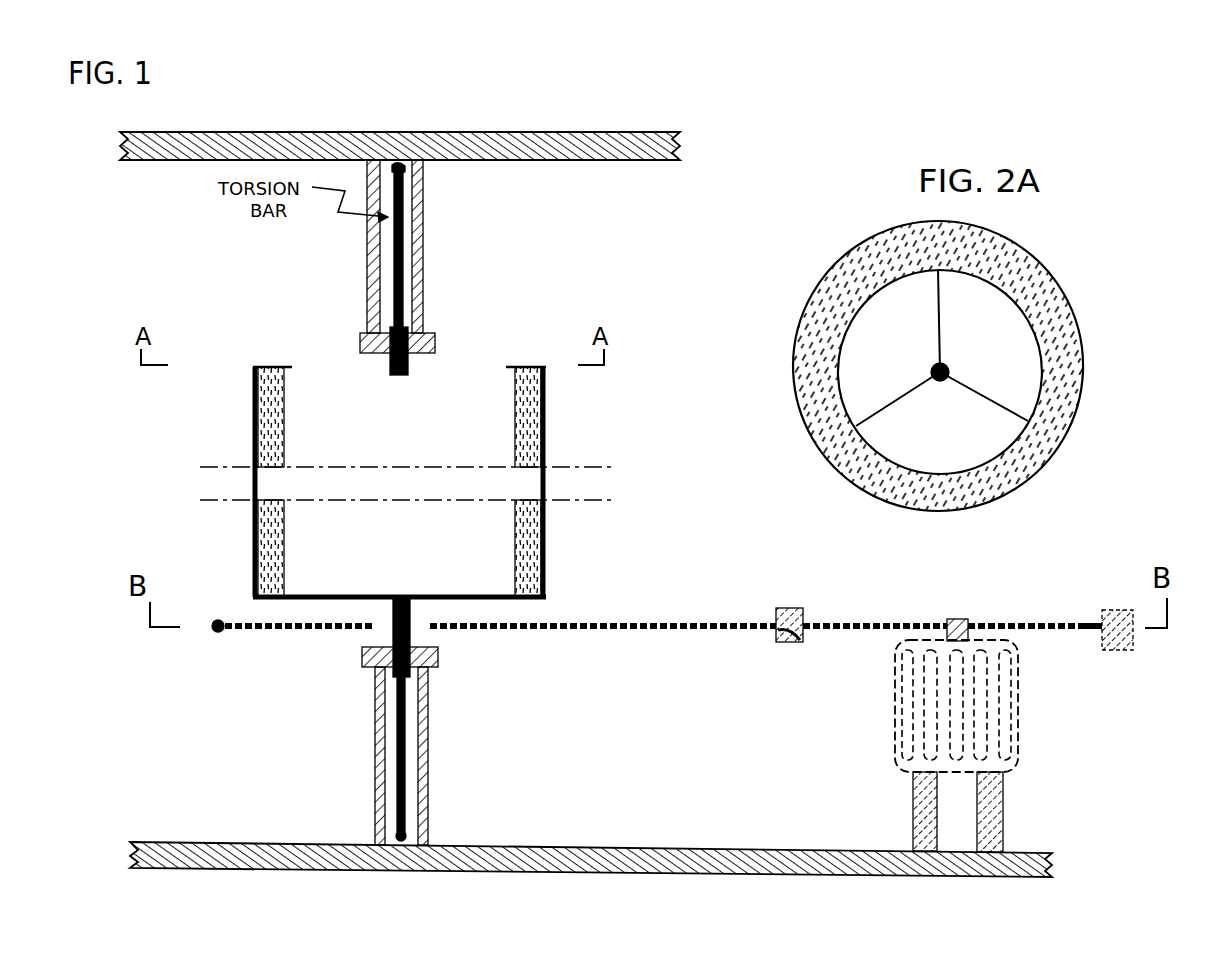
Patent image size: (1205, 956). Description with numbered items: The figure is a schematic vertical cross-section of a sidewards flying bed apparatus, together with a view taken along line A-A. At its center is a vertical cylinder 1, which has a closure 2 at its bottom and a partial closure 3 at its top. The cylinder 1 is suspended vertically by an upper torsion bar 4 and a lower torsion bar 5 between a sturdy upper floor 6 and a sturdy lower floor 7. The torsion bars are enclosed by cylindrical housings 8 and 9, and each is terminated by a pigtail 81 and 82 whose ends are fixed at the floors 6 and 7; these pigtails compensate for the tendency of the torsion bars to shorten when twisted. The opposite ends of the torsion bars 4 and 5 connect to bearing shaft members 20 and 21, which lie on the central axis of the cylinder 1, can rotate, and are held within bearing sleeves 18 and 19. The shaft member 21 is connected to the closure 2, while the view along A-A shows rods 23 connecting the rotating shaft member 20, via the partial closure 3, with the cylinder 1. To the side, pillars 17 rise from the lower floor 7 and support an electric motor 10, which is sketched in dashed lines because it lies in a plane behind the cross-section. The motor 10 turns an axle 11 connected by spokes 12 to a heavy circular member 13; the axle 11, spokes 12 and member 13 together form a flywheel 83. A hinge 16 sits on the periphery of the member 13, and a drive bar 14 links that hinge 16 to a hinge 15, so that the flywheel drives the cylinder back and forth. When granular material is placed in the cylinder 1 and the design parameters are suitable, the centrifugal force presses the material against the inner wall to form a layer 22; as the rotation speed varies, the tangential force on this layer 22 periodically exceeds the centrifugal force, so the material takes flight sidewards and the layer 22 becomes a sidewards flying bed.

In FIG. 1, the vertical cylinder 1 is at (253, 404).
In FIG. 2A, the vertical cylinder 1 is at (1018, 242).
In FIG. 1, the closure 2 is at (340, 595).
In FIG. 1, the partial closure 3 is at (290, 365).
In FIG. 2A, the partial closure 3 is at (820, 330).
In FIG. 1, the torsion bar 4 is at (405, 250).
In FIG. 1, the torsion bar 5 is at (397, 723).
In FIG. 1, the upper floor 6 is at (197, 160).
In FIG. 1, the lower floor 7 is at (207, 841).
In FIG. 1, the cylindrical housing 8 is at (367, 280).
In FIG. 1, the cylindrical housing 9 is at (428, 732).
In FIG. 1, the electric motor 10 is at (895, 712).
In FIG. 1, the axle 11 is at (960, 619).
In FIG. 1, the spokes 12 is at (856, 626).
In FIG. 1, the heavy circular member 13 is at (786, 608).
In FIG. 1, the drive bar 14 is at (286, 637).
In FIG. 1, the hinge 15 is at (218, 619).
In FIG. 1, the hinge 16 is at (778, 636).
In FIG. 1, the pillars 17 is at (913, 798).
In FIG. 1, the bearing sleeve 18 is at (420, 339).
In FIG. 1, the bearing sleeve 19 is at (438, 658).
In FIG. 1, the bearing shaft member 20 is at (408, 368).
In FIG. 2A, the bearing shaft member 20 is at (932, 367).
In FIG. 1, the bearing shaft member 21 is at (412, 612).
In FIG. 1, the layer 22 is at (283, 426).
In FIG. 2A, the rods 23 is at (981, 385).
In FIG. 1, the pigtail 81 is at (405, 170).
In FIG. 1, the pigtail 82 is at (406, 834).
In FIG. 1, the flywheel 83 is at (915, 601).